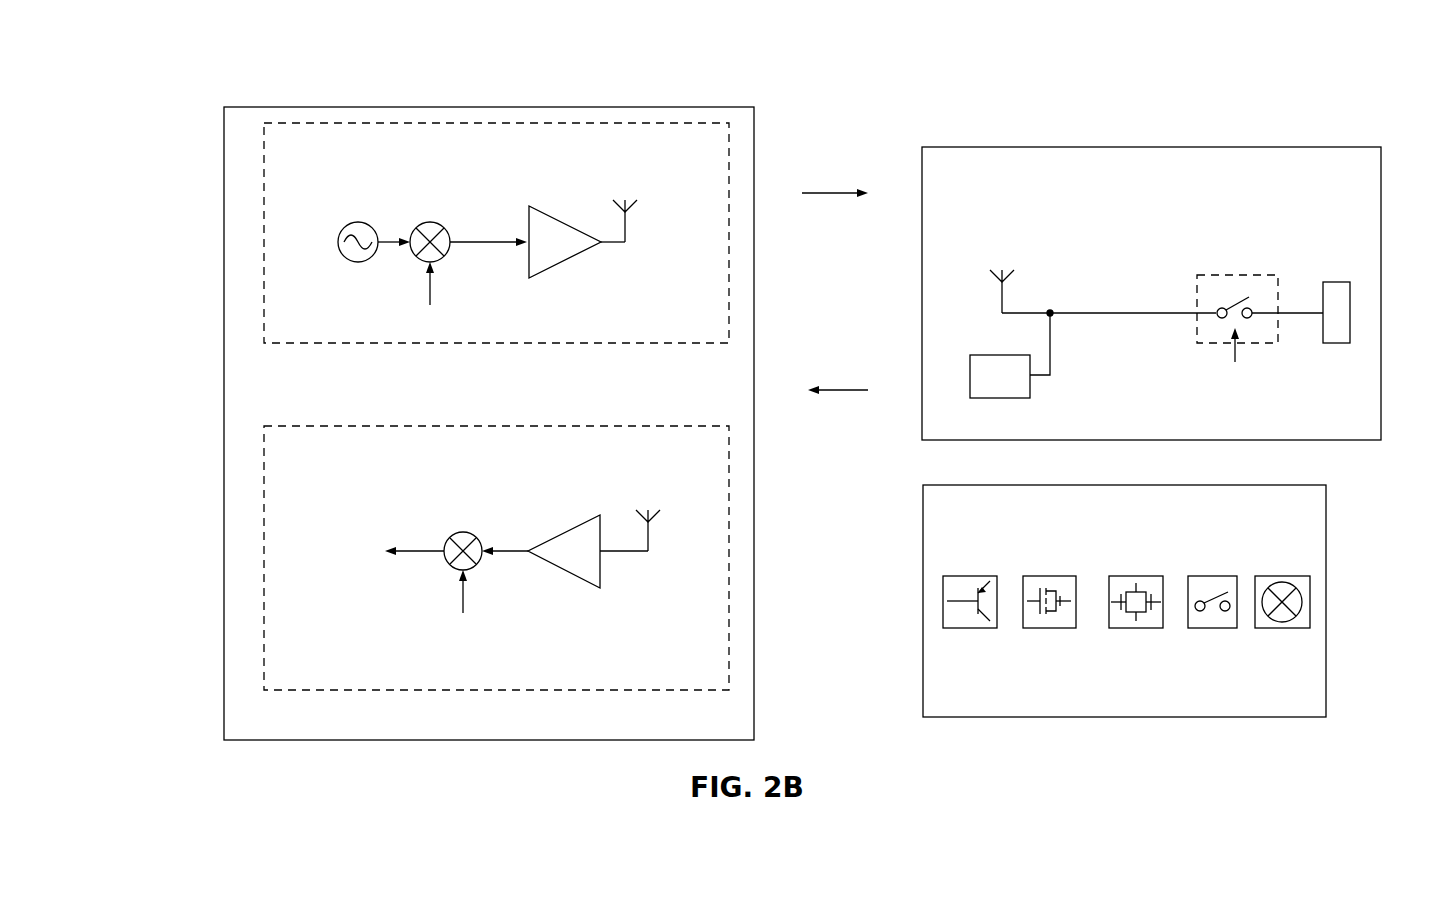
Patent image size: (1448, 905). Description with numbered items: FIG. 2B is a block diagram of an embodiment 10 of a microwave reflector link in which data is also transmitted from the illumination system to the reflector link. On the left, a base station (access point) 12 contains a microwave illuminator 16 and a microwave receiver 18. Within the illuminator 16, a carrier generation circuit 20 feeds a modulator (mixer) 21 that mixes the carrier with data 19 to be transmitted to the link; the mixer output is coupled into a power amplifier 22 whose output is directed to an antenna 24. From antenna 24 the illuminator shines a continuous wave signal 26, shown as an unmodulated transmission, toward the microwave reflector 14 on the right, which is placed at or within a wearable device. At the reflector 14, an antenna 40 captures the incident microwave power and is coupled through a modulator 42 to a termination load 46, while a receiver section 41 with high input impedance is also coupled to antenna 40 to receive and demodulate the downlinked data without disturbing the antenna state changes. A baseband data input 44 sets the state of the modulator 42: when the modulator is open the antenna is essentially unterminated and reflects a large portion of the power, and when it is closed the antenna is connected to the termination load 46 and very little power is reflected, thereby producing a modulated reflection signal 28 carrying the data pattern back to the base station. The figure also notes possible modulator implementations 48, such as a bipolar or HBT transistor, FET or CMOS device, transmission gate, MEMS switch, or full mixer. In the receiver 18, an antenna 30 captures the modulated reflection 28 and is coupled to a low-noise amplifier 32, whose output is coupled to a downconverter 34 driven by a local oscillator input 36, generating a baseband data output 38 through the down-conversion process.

The embodiment of the microwave reflector link 10 is at (168, 38).
The base station (access point) 12 is at (223, 230).
The microwave reflector 14 is at (1333, 147).
The microwave illuminator 16 is at (637, 345).
The receiver system 18 is at (350, 422).
The data 19 is at (403, 320).
The carrier generation circuit 20 is at (345, 256).
The modulator (mixer) 21 is at (434, 222).
The power amplifier 22 is at (565, 218).
The antenna 24 is at (625, 248).
The continuous wave (CW) signal 26 is at (822, 193).
The modulated reflection signal 28 is at (830, 390).
The antenna 30 is at (620, 553).
The low-noise amplifier 32 is at (562, 574).
The downconverter 34 is at (472, 535).
The local oscillator (LO) input 36 is at (412, 638).
The baseband data output 38 is at (403, 547).
The antenna 40 is at (998, 300).
The receiver section 41 is at (992, 398).
The modulator 42 is at (1202, 345).
The baseband data input 44 is at (1292, 383).
The termination load 46 is at (1340, 282).
The modulator implementations 48 is at (1327, 530).